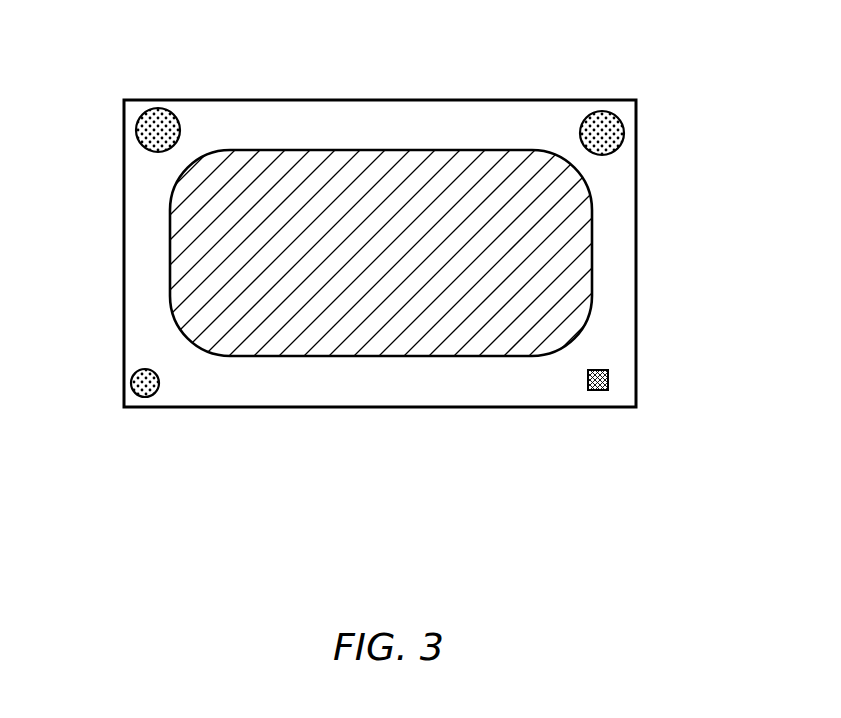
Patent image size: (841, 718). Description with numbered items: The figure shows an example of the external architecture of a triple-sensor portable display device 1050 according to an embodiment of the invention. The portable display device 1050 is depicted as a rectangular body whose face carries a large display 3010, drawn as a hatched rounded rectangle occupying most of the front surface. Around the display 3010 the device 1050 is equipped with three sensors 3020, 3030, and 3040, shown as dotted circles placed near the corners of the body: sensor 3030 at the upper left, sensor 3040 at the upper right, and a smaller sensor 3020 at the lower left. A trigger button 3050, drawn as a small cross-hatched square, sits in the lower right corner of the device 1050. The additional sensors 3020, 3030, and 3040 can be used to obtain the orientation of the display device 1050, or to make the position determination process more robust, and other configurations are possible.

The portable display device 1050 is at (615, 266).
The display 3010 is at (577, 194).
The sensor 3020 is at (138, 385).
The sensor 3030 is at (150, 108).
The sensor 3040 is at (595, 111).
The trigger button 3050 is at (610, 380).